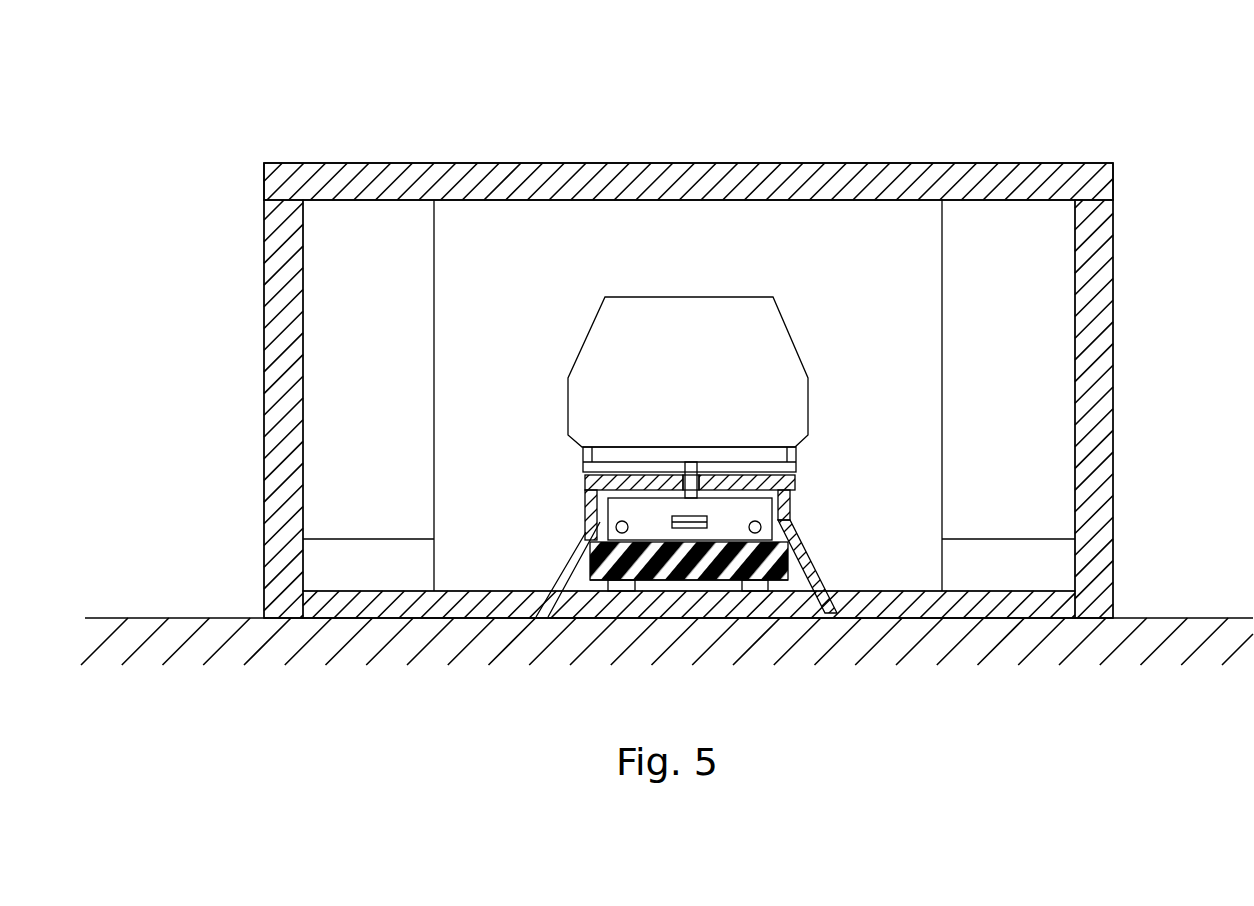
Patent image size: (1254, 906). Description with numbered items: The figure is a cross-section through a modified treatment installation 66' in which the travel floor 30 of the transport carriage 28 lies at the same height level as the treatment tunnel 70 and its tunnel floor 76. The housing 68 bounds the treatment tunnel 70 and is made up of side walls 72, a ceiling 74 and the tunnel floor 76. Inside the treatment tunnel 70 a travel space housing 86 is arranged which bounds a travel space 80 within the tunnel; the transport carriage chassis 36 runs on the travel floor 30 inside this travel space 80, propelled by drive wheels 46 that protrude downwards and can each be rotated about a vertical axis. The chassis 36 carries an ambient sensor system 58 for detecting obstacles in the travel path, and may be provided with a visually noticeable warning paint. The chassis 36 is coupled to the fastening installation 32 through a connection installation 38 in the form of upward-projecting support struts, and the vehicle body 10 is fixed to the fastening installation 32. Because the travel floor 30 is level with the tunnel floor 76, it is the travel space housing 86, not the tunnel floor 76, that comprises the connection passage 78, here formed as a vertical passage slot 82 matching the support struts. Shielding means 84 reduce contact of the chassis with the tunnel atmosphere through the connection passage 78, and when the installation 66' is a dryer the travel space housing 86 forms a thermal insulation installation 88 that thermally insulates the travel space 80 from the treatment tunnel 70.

The modified treatment installation 66' is at (688, 325).
The housing 68 is at (511, 160).
The treatment tunnel 70 is at (615, 245).
The ceiling 74 is at (735, 180).
The side walls 72 is at (292, 240).
The vehicle body 10 is at (742, 320).
The fastening installation 32 is at (769, 460).
The vertical passage slot 82 is at (668, 516).
The shielding means 84 is at (677, 464).
The connection installation 38 is at (703, 490).
The connection passage 78 is at (668, 505).
The travel space housing 86 is at (796, 486).
The transport carriage 28 is at (760, 510).
The thermal insulation installation 88 is at (580, 522).
The transport carriage chassis 36 is at (792, 560).
The tunnel floor 76 is at (905, 605).
The drive wheels 46 is at (622, 591).
The travel floor 30 is at (663, 592).
The ambient sensor system 58 is at (692, 546).
The travel space 80 is at (801, 596).